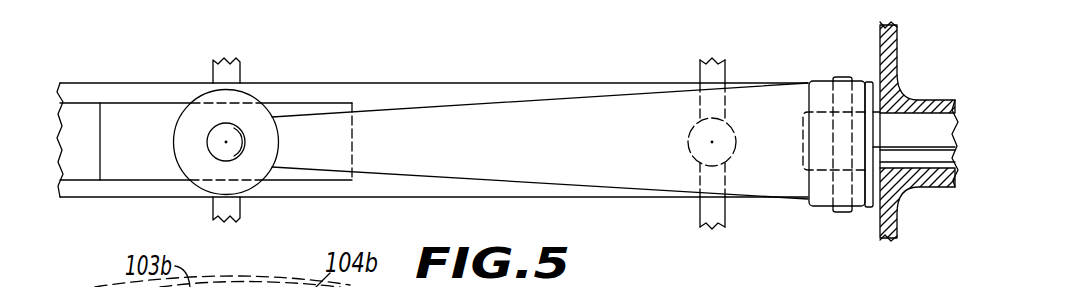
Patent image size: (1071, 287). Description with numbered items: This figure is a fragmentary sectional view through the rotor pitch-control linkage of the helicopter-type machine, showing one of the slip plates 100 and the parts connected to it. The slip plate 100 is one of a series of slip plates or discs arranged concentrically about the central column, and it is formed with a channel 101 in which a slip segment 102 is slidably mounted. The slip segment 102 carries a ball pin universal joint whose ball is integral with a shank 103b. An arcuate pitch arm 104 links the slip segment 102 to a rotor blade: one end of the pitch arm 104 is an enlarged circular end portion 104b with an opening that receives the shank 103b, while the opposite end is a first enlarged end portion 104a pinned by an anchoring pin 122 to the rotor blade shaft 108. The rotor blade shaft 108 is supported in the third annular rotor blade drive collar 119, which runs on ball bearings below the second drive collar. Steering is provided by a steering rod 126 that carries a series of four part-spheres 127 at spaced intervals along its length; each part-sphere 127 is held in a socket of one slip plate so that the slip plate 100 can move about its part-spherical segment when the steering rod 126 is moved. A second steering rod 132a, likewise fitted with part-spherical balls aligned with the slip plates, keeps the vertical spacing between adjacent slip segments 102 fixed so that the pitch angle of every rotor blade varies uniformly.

The slip plate 100 is at (478, 80).
The channel 101 is at (83, 118).
The slip segment 102 is at (148, 118).
The shank 103b is at (217, 143).
The arcuate pitch arm 104 is at (527, 123).
The first enlarged end portion 104a is at (818, 82).
The enlarged circular end portion 104b is at (242, 90).
The rotor blade shaft 108 is at (908, 147).
The third annular rotor blade drive collar 119 is at (895, 57).
The anchoring pin 122 is at (843, 77).
The steering rod 126 is at (709, 216).
The part-sphere 127 is at (688, 133).
The second steering rod 132a is at (228, 73).